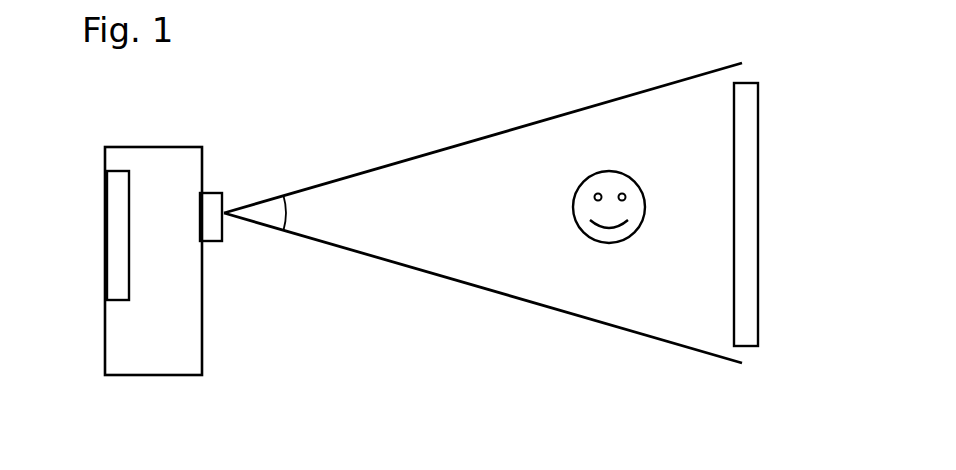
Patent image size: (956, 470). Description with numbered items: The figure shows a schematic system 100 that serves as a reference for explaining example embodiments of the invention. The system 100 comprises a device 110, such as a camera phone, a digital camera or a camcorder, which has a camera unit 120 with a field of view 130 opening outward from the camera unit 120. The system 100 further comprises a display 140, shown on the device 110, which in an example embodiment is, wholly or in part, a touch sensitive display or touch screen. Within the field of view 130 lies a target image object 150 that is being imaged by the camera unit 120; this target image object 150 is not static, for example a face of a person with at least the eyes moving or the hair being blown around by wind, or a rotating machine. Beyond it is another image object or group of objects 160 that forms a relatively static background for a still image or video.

The system 100 is at (193, 115).
The device 110 is at (211, 261).
The camera unit 120 is at (250, 242).
The field of view 130 is at (483, 213).
The display 140 is at (75, 229).
The target image object 150 is at (646, 245).
The image object or group of objects 160 is at (791, 214).